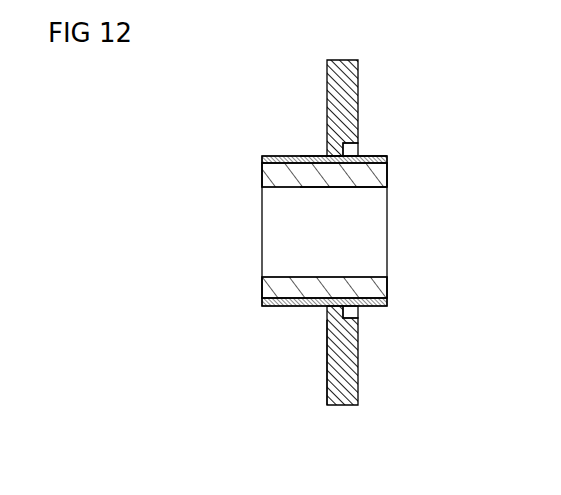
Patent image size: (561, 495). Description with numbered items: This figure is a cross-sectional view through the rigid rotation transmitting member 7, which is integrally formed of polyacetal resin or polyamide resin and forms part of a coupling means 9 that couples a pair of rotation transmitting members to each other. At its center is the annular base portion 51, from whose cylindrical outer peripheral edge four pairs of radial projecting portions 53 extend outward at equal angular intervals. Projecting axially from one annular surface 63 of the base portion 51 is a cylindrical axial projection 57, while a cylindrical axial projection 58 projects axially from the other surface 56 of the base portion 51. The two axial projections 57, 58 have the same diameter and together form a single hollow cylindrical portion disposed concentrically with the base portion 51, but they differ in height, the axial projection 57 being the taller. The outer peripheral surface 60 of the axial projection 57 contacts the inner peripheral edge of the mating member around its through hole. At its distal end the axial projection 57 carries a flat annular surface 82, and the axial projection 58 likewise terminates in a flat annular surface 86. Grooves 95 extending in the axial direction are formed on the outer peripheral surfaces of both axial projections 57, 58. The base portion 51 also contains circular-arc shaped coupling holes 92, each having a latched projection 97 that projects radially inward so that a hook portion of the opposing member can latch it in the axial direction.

The rotation transmitting member 7 is at (325, 57).
The radial projecting portion 53 is at (346, 76).
The coupling means 9 is at (358, 143).
The outer peripheral surface 60 is at (290, 157).
The groove 95 is at (387, 158).
The axial projection 58 is at (378, 176).
The axial projection 57 is at (262, 174).
The flat annular surface 86 is at (388, 292).
The flat annular surface 82 is at (262, 290).
The latched projection 97 is at (352, 158).
The coupling hole 92 is at (359, 168).
The other surface 56 is at (358, 376).
The annular surface 63 is at (327, 376).
The base portion 51 is at (358, 318).